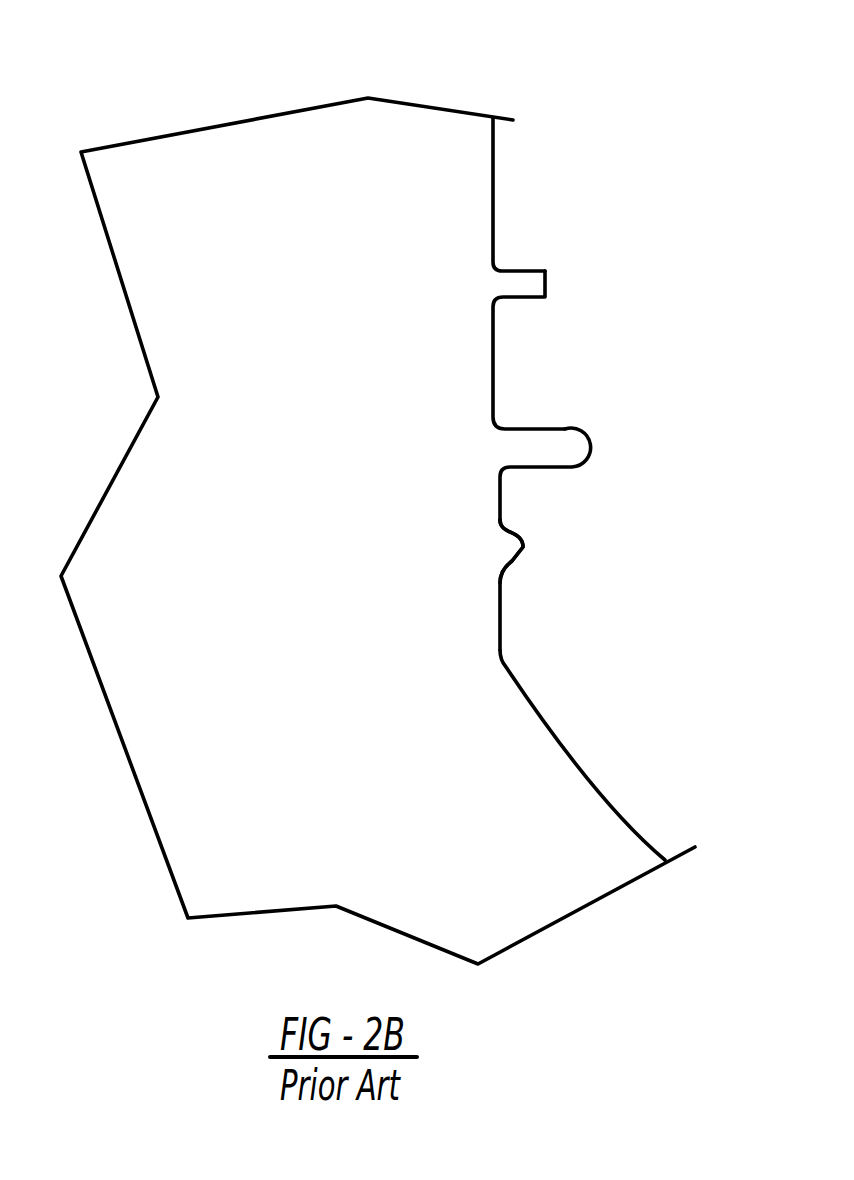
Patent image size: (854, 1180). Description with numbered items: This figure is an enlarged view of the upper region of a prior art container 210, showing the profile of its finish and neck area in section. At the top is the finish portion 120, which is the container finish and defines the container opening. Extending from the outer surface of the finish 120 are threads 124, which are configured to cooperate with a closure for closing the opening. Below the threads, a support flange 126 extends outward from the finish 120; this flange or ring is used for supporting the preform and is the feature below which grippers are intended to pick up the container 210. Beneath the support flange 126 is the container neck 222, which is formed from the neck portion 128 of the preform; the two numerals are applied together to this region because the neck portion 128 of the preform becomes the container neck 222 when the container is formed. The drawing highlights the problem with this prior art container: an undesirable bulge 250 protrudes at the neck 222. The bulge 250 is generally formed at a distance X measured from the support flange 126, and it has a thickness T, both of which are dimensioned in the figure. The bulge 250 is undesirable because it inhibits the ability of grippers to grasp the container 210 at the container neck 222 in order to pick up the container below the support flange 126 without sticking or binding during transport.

The container 210 is at (199, 78).
The finish portion 120 is at (493, 197).
The threads 124 is at (545, 282).
The support flange 126 is at (565, 429).
The container neck 222 is at (500, 492).
The neck portion 128 is at (511, 551).
The bulge 250 is at (523, 547).
The distance X is at (535, 546).
The thickness T is at (460, 627).